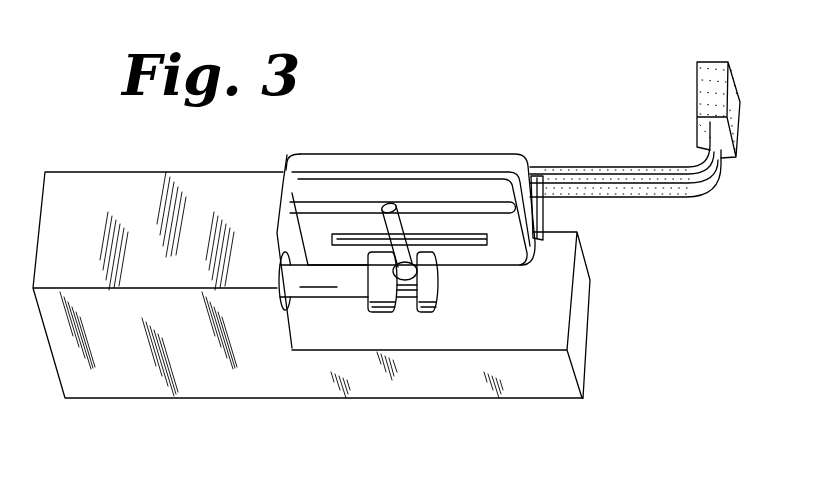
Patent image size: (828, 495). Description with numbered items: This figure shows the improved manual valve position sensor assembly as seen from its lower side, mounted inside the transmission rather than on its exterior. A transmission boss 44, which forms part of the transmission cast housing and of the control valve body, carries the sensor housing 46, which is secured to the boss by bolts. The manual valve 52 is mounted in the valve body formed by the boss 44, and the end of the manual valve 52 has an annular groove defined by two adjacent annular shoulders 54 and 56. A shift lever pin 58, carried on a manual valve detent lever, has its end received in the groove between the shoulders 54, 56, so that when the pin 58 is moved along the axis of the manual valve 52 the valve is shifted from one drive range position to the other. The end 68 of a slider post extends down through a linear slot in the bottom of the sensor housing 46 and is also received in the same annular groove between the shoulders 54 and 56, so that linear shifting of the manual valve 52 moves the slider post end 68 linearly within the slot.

The transmission boss 44 is at (125, 378).
The sensor housing 46 is at (457, 187).
The manual valve 52 is at (318, 280).
The annular shoulder 54 is at (425, 312).
The annular shoulder 56 is at (380, 312).
The shift lever pin 58 is at (385, 213).
The end of slider post 68 is at (412, 237).